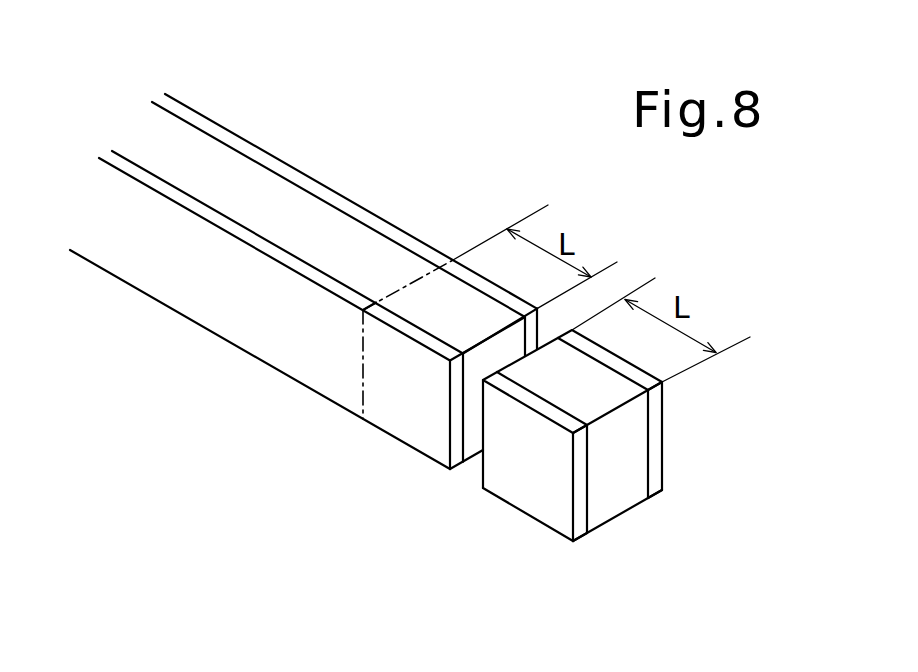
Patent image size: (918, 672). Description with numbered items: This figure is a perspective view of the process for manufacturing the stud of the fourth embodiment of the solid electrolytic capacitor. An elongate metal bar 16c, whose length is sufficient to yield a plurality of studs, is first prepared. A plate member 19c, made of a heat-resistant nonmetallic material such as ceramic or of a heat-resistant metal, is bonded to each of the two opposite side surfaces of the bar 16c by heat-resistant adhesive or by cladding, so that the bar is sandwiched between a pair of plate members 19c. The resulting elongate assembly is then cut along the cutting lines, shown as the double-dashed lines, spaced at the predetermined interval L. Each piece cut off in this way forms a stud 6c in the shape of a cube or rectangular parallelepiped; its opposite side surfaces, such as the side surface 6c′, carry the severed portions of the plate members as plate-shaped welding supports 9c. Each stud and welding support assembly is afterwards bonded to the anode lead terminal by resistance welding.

The plate member 19c is at (255, 137).
The metal bar 16c is at (303, 220).
The plate-shaped welding support 9c is at (523, 468).
The stud 6c is at (622, 495).
The side surface of the stud 6c′ is at (582, 480).